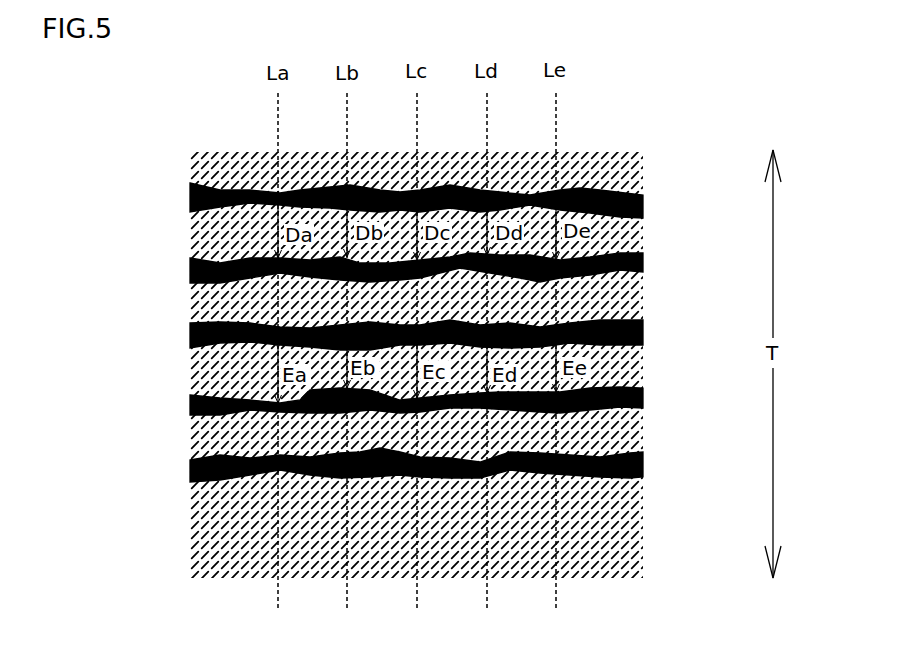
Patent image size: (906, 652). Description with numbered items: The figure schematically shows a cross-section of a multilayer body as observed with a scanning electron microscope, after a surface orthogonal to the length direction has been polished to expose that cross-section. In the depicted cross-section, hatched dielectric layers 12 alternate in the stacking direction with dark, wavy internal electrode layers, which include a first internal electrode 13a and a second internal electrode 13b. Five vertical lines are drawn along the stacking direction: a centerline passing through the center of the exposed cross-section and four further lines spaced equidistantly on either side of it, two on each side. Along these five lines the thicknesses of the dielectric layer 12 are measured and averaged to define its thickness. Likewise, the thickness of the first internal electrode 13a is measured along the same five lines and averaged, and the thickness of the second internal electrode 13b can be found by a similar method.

The dielectric layer 12 is at (637, 232).
The first internal electrode 13a is at (190, 196).
The second internal electrode 13b is at (190, 403).